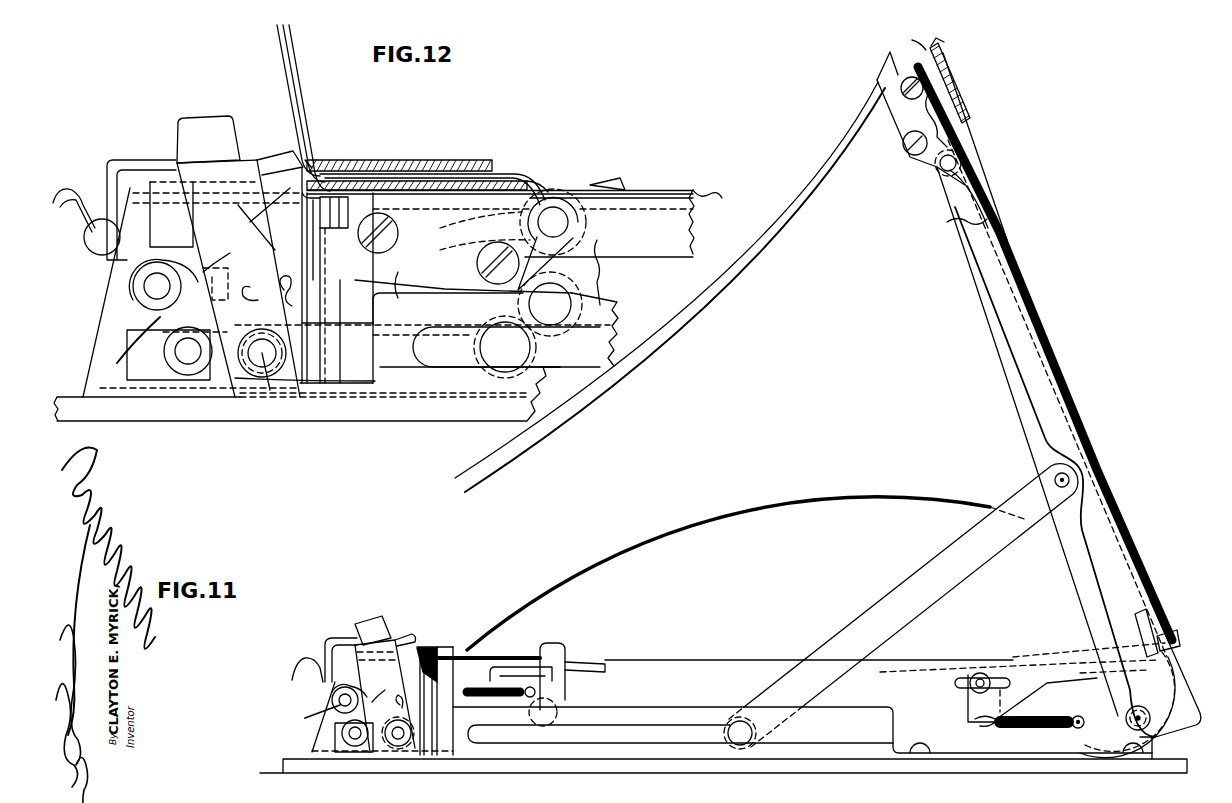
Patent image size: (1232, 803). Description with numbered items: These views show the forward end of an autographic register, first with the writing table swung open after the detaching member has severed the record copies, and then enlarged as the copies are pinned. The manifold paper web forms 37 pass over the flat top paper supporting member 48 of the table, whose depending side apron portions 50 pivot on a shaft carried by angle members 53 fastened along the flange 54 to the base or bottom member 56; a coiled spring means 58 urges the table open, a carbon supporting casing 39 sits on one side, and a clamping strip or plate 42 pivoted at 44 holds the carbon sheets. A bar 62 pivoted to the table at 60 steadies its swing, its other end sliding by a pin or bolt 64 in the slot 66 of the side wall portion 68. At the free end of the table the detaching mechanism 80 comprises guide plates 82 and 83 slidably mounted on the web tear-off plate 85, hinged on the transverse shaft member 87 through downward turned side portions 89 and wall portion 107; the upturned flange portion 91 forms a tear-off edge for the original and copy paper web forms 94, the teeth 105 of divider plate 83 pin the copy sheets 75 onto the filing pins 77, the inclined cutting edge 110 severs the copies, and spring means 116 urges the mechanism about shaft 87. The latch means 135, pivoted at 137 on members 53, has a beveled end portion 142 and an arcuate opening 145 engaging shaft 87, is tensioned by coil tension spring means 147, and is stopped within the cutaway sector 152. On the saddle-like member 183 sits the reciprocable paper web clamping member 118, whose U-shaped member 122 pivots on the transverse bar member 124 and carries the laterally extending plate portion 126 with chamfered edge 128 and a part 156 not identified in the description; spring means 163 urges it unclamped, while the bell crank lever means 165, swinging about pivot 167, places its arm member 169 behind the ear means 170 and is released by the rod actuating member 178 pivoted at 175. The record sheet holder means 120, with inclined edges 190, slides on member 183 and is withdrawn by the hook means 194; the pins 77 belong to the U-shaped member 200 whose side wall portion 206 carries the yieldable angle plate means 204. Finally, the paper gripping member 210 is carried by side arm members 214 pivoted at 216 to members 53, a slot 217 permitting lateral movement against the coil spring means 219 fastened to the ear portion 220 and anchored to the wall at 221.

In FIG. 12, the manifold paper web forms 37 is at (680, 190).
In FIG. 11, the manifold paper web forms 37 is at (758, 234).
In FIG. 11, the carbon supporting casing 39 is at (1140, 706).
In FIG. 11, the clamping strip or plate 42 is at (1000, 306).
In FIG. 11, the pivot of clamping plate 44 is at (1135, 630).
In FIG. 12, the flat top paper supporting member 48 is at (707, 191).
In FIG. 11, the flat top paper supporting member 48 is at (948, 224).
In FIG. 12, the depending side apron portions 50 is at (660, 258).
In FIG. 11, the depending side apron portions 50 is at (1015, 404).
In FIG. 11, the angle members 53 is at (1158, 745).
In FIG. 11, the flange 54 is at (968, 755).
In FIG. 11, the base or bottom member 56 is at (1018, 758).
In FIG. 11, the spring means 58 is at (1118, 742).
In FIG. 11, the pivot of bar 60 is at (1055, 478).
In FIG. 11, the bar 62 is at (890, 600).
In FIG. 12, the pin or bolt 64 is at (490, 348).
In FIG. 11, the pin or bolt 64 is at (758, 735).
In FIG. 12, the slot 66 is at (420, 357).
In FIG. 11, the slot 66 is at (696, 718).
In FIG. 12, the side wall portion 68 is at (443, 290).
In FIG. 11, the side wall portion 68 is at (653, 712).
In FIG. 12, the copy sheets 75 is at (554, 207).
In FIG. 11, the copy sheets 75 is at (710, 516).
In FIG. 12, the filing pins 77 is at (345, 313).
In FIG. 11, the filing pins 77 is at (440, 705).
In FIG. 12, the manifold paper guide and record copy detaching mechanism 80 is at (487, 142).
In FIG. 11, the manifold paper guide and record copy detaching mechanism 80 is at (974, 99).
In FIG. 12, the paper web guide plate 82 is at (395, 160).
In FIG. 11, the paper web guide plate 82 is at (946, 80).
In FIG. 12, the web guide plate 83 is at (518, 178).
In FIG. 11, the web guide plate 83 is at (915, 40).
In FIG. 12, the web tear-off plate 85 is at (443, 240).
In FIG. 11, the web tear-off plate 85 is at (915, 100).
In FIG. 12, the transverse shaft member 87 is at (560, 210).
In FIG. 11, the transverse shaft member 87 is at (940, 170).
In FIG. 12, the downward turned side portions 89 is at (602, 262).
In FIG. 11, the downward turned side portions 89 is at (940, 188).
In FIG. 12, the upturned flange portion 91 is at (310, 158).
In FIG. 11, the upturned flange portion 91 is at (935, 40).
In FIG. 12, the original and copy paper web forms 94 is at (309, 116).
In FIG. 11, the original and copy paper web forms 94 is at (820, 180).
In FIG. 12, the teeth 105 is at (340, 195).
In FIG. 11, the teeth 105 is at (920, 52).
In FIG. 12, the wall portion 107 is at (448, 309).
In FIG. 11, the wall portion 107 is at (898, 134).
In FIG. 11, the inclined cutting edge 110 is at (905, 70).
In FIG. 11, the spring means 116 is at (978, 190).
In FIG. 12, the reciprocable paper web clamping member 118 is at (264, 153).
In FIG. 11, the reciprocable paper web clamping member 118 is at (404, 638).
In FIG. 12, the record sheet holder means 120 is at (270, 200).
In FIG. 11, the record sheet holder means 120 is at (430, 650).
In FIG. 12, the U-shaped member 122 is at (258, 264).
In FIG. 12, the transverse bar member 124 is at (257, 372).
In FIG. 11, the transverse bar member 124 is at (397, 748).
In FIG. 12, the laterally extending plate portion 126 is at (242, 118).
In FIG. 11, the laterally extending plate portion 126 is at (385, 696).
In FIG. 12, the chamfered edge 128 is at (322, 168).
In FIG. 12, the latch means 135 is at (612, 180).
In FIG. 11, the latch means 135 is at (560, 652).
In FIG. 12, the pivot of latch 137 is at (556, 290).
In FIG. 11, the pivot of latch 137 is at (558, 698).
In FIG. 11, the beveled end portion 142 is at (542, 660).
In FIG. 11, the arcuate opening 145 is at (521, 672).
In FIG. 11, the coil tension spring means 147 is at (508, 703).
In FIG. 11, the cutaway sector 152 is at (600, 680).
In FIG. 12, the knob 156 is at (200, 118).
In FIG. 11, the knob 156 is at (365, 620).
In FIG. 12, the spring means 163 is at (282, 297).
In FIG. 11, the spring means 163 is at (387, 707).
In FIG. 12, the bell crank lever means 165 is at (126, 340).
In FIG. 11, the bell crank lever means 165 is at (318, 720).
In FIG. 12, the pivot of bell crank 167 is at (157, 286).
In FIG. 11, the pivot of bell crank 167 is at (348, 691).
In FIG. 12, the arm member 169 is at (230, 253).
In FIG. 11, the arm member 169 is at (383, 693).
In FIG. 12, the ear means 170 is at (243, 291).
In FIG. 12, the pivot attachment on bell crank arm 175 is at (188, 352).
In FIG. 11, the pivot attachment on bell crank arm 175 is at (342, 735).
In FIG. 12, the rod actuating member 178 is at (354, 358).
In FIG. 11, the rod actuating member 178 is at (462, 735).
In FIG. 12, the saddle-like member 183 is at (112, 288).
In FIG. 11, the saddle-like member 183 is at (308, 696).
In FIG. 12, the inclined edges 190 is at (266, 219).
In FIG. 12, the hook means 194 is at (86, 215).
In FIG. 12, the U-shaped member 200 is at (353, 392).
In FIG. 12, the yieldable angle plate means 204 is at (320, 262).
In FIG. 12, the side wall portion 206 is at (300, 262).
In FIG. 11, the spring actuated angular flange member 210 is at (1175, 630).
In FIG. 11, the side arm members 214 is at (1037, 658).
In FIG. 11, the pivot of side arms 216 is at (980, 672).
In FIG. 11, the slot 217 is at (1001, 701).
In FIG. 11, the coil spring means 219 is at (1050, 714).
In FIG. 11, the ear portion 220 is at (975, 716).
In FIG. 11, the spring anchorage on side wall 221 is at (1080, 716).